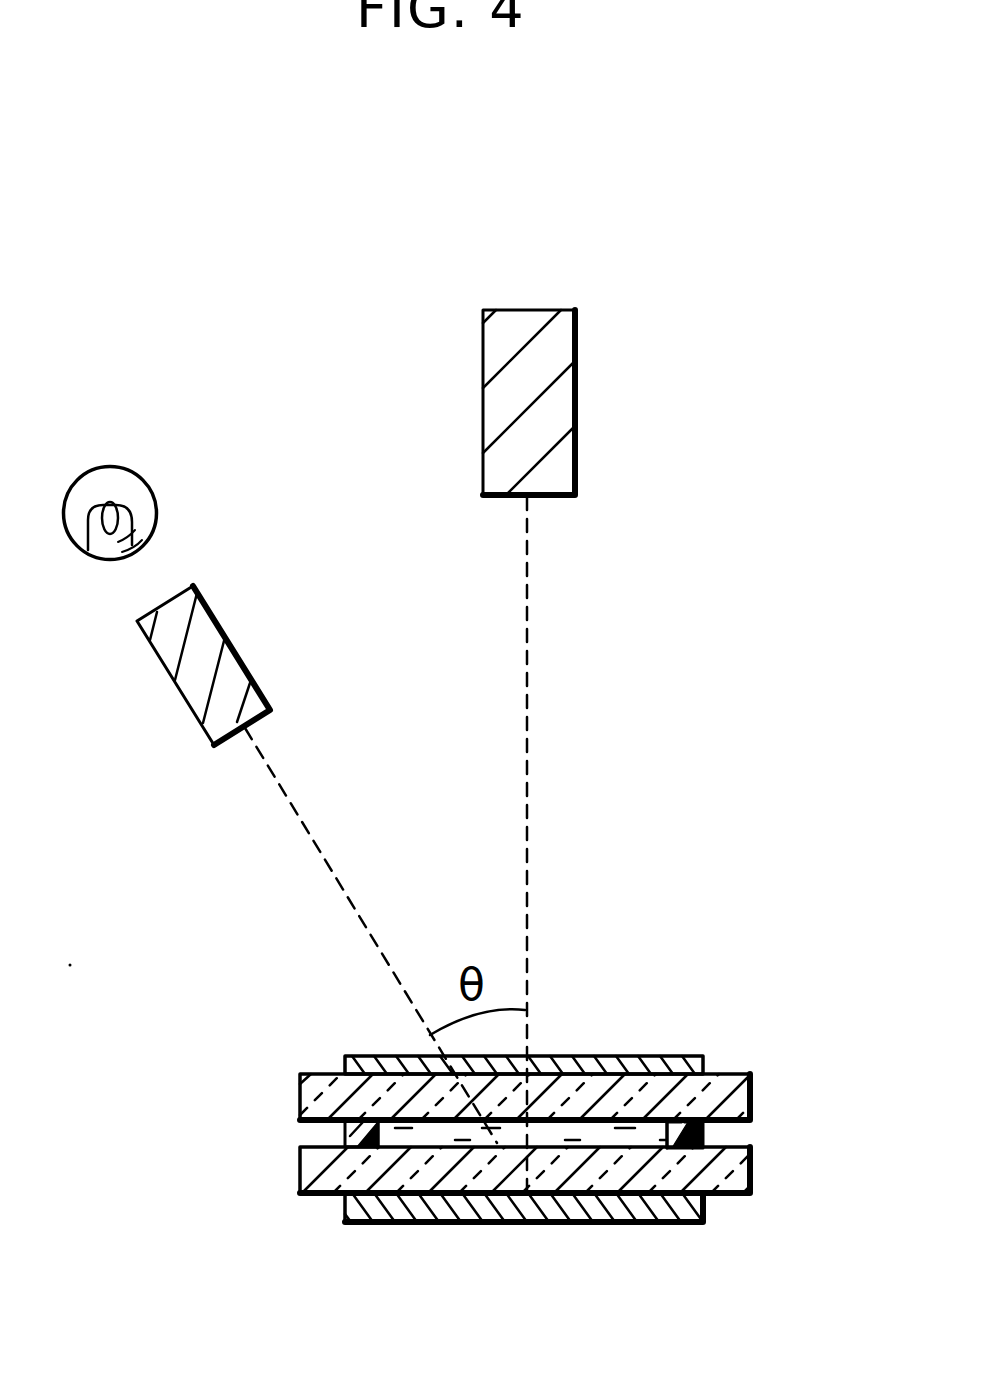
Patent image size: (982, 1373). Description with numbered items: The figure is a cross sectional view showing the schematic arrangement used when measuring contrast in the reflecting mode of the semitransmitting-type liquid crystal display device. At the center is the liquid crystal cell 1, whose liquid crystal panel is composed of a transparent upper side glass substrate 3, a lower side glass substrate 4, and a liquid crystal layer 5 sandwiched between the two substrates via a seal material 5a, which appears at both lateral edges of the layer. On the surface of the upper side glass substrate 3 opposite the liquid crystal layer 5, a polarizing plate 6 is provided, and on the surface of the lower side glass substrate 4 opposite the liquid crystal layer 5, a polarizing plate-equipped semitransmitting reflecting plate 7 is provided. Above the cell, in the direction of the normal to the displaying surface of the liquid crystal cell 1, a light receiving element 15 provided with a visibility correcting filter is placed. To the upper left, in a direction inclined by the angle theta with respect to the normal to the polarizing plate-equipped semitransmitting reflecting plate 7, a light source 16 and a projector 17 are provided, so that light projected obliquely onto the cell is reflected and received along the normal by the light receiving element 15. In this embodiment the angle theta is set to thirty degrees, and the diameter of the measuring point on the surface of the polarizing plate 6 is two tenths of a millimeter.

The liquid crystal cell 1 is at (257, 1057).
The upper side glass substrate 3 is at (752, 1094).
The lower side glass substrate 4 is at (733, 1173).
The liquid crystal layer 5 is at (595, 1133).
The seal material 5a is at (335, 1125).
The polarizing plate 6 is at (680, 1062).
The polarizing plate-equipped semitransmitting reflecting plate 7 is at (670, 1225).
The light receiving element 15 is at (560, 408).
The light source 16 is at (132, 492).
The projector 17 is at (223, 640).